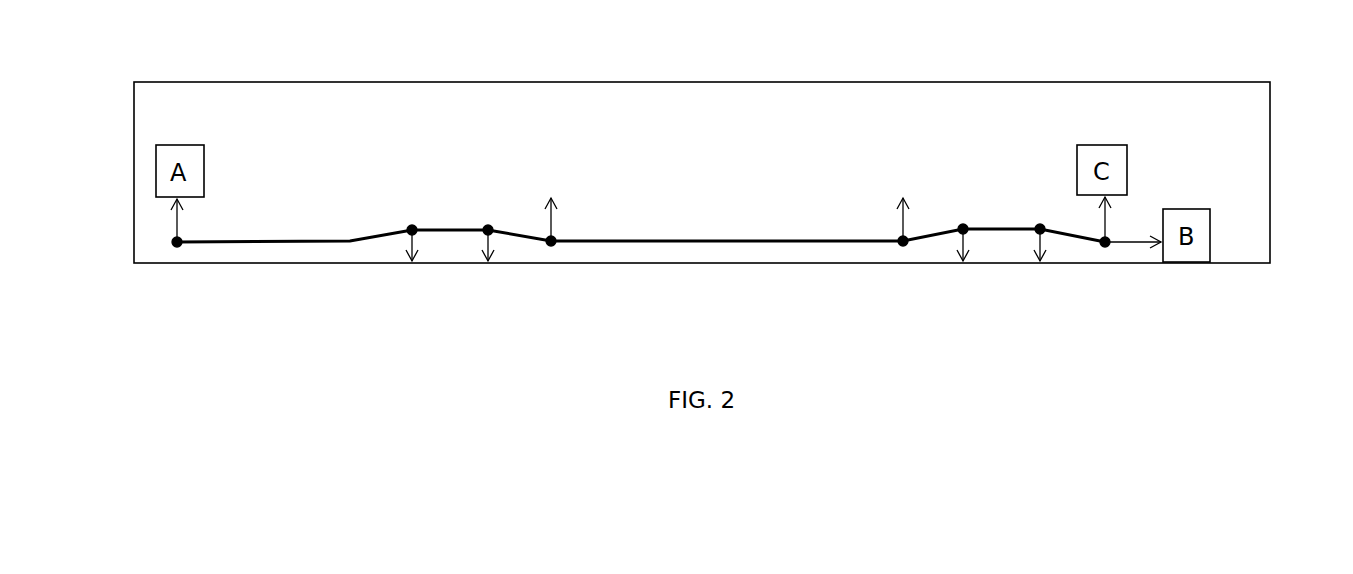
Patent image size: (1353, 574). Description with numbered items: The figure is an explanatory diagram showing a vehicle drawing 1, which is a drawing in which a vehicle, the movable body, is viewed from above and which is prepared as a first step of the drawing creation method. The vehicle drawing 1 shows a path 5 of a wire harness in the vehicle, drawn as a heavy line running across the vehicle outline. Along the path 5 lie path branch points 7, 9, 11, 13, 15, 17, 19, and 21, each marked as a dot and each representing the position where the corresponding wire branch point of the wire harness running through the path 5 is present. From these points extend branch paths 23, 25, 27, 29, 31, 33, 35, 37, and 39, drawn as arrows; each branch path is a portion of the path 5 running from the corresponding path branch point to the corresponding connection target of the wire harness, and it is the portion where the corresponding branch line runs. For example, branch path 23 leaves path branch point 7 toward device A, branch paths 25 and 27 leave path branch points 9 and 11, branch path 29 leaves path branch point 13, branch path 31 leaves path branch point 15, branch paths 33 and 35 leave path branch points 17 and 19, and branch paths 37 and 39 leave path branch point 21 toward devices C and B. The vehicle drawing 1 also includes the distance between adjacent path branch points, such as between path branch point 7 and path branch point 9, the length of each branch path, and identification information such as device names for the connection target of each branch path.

The vehicle drawing 1 is at (1270, 144).
The path 5 is at (733, 240).
The path branch point 7 is at (180, 238).
The path branch point 9 is at (414, 227).
The path branch point 11 is at (490, 227).
The path branch point 13 is at (555, 239).
The path branch point 15 is at (906, 238).
The path branch point 17 is at (965, 226).
The path branch point 19 is at (1041, 226).
The path branch point 21 is at (1108, 239).
The branch path 23 is at (175, 219).
The branch path 25 is at (416, 243).
The branch path 27 is at (492, 243).
The branch path 29 is at (553, 220).
The branch path 31 is at (900, 222).
The branch path 33 is at (967, 243).
The branch path 35 is at (1044, 243).
The branch path 37 is at (1107, 220).
The branch path 39 is at (1130, 245).